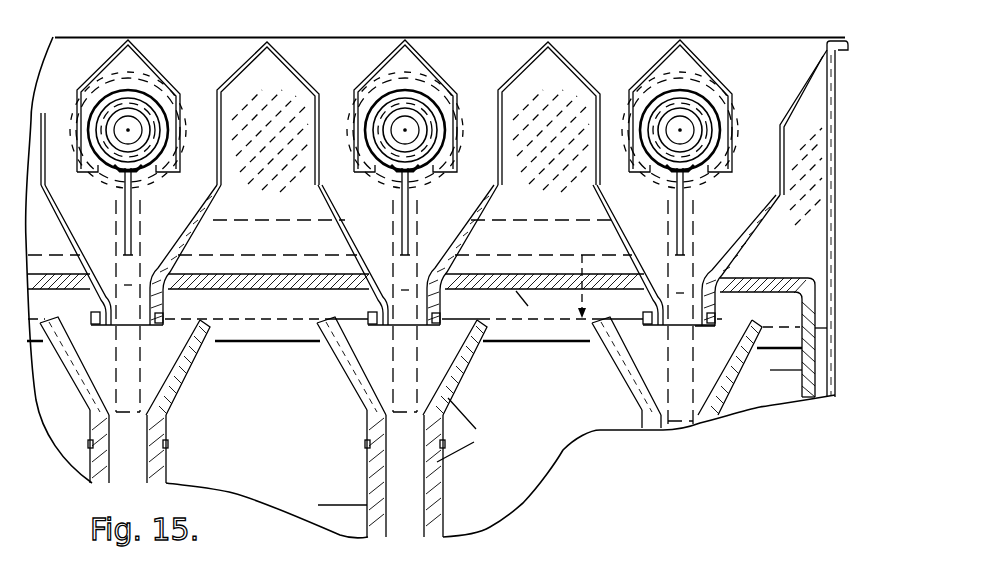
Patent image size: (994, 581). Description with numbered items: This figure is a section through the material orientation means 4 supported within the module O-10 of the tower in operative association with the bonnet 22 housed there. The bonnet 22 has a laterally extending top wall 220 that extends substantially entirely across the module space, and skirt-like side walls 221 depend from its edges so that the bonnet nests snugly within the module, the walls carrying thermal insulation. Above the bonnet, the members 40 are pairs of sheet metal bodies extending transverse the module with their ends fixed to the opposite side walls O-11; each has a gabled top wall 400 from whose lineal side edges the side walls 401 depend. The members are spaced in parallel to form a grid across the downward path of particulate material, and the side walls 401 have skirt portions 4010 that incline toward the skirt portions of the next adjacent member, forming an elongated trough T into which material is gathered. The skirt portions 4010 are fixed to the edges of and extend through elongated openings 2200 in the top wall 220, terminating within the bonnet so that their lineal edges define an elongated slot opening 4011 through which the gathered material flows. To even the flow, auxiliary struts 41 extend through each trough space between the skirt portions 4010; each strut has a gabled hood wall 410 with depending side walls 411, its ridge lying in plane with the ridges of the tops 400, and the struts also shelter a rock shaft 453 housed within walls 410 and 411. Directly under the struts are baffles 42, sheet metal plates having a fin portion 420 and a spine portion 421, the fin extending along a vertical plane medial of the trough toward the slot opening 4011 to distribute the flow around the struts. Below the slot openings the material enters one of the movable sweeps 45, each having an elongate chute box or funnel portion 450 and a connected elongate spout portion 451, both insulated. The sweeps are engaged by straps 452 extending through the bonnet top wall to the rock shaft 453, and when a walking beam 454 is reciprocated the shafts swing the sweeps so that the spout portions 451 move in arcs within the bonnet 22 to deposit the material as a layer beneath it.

The material orientation means 4 is at (843, 97).
The members 40 is at (278, 38).
The gabled top wall 400 is at (246, 57).
The side walls 401 is at (314, 108).
The skirt portions 4010 is at (189, 236).
The slot opening 4011 is at (678, 318).
The auxiliary struts 41 is at (135, 36).
The gabled top or hood wall 410 is at (100, 66).
The side walls 411 is at (338, 158).
The baffles 42 is at (124, 228).
The fin portion 420 is at (125, 211).
The spine portion 421 is at (112, 170).
The movable sweeps 45 is at (188, 379).
The chute box or funnel portion 450 is at (352, 366).
The spout portion 451 is at (367, 469).
The straps 452 is at (419, 245).
The rock shaft 453 is at (680, 132).
The walking beam 454 is at (336, 295).
The bonnet 22 is at (780, 385).
The top wall 220 is at (760, 278).
The side walls 221 is at (803, 358).
The elongated openings 2200 is at (626, 268).
The module O-10 is at (840, 242).
The side walls O-11 is at (836, 182).